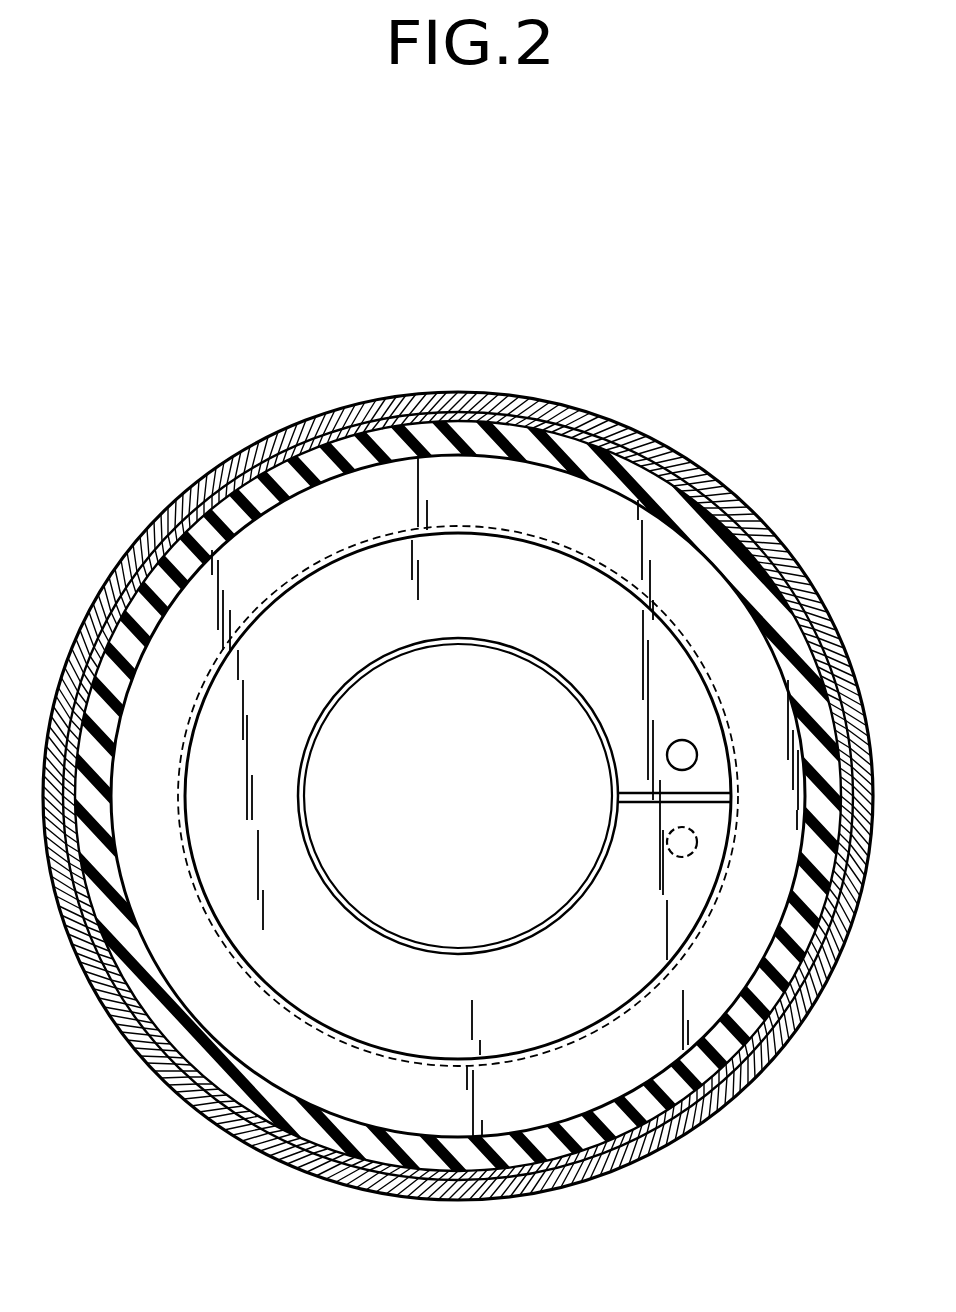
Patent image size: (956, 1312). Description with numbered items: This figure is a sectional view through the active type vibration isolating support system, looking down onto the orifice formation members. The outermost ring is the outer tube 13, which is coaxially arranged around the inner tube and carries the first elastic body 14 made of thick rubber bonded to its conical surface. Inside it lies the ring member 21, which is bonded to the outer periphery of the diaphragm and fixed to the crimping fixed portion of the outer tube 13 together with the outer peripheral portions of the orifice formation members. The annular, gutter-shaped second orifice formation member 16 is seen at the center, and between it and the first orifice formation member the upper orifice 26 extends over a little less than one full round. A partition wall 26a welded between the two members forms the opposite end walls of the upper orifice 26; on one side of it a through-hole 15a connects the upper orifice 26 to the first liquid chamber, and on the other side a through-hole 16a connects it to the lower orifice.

The outer tube 13 is at (695, 468).
The first elastic body 14 is at (470, 417).
The ring member 21 is at (247, 477).
The upper orifice 26 is at (541, 619).
The second orifice formation member 16 is at (378, 668).
The through-hole 16a is at (675, 748).
The partition wall 26a is at (638, 800).
The through-hole 15a is at (670, 853).